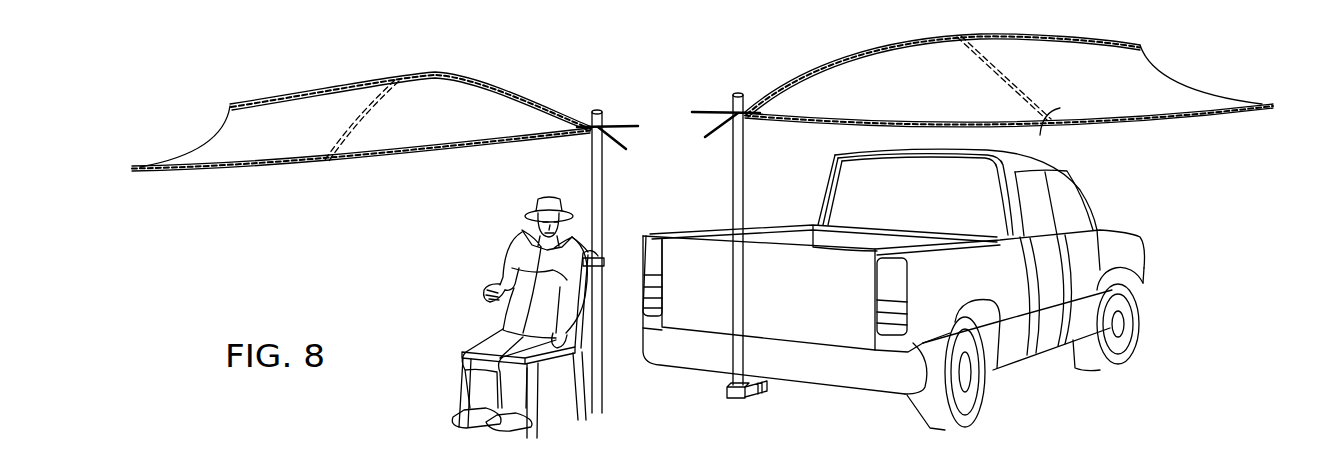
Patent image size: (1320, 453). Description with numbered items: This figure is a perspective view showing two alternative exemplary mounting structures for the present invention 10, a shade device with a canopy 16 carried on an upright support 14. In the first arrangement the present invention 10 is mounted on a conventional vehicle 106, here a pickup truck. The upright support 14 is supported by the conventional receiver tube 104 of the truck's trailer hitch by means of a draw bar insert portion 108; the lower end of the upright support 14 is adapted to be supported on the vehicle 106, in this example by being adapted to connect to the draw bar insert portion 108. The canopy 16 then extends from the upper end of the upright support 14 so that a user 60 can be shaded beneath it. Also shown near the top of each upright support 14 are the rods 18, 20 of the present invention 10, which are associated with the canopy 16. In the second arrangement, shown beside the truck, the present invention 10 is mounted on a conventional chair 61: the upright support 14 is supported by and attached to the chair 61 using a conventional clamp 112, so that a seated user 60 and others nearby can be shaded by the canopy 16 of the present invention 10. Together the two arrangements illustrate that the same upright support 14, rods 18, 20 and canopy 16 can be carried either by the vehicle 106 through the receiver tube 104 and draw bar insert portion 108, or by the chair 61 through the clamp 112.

The present invention 10 is at (697, 100).
The upright support 14 is at (592, 165).
The canopy 16 is at (494, 100).
The rod 18 is at (624, 150).
The rod 20 is at (620, 125).
The user 60 is at (493, 337).
The chair 61 is at (577, 370).
The receiver tube 104 is at (773, 392).
The vehicle 106 is at (908, 289).
The draw bar insert portion 108 is at (727, 393).
The clamp 112 is at (605, 261).